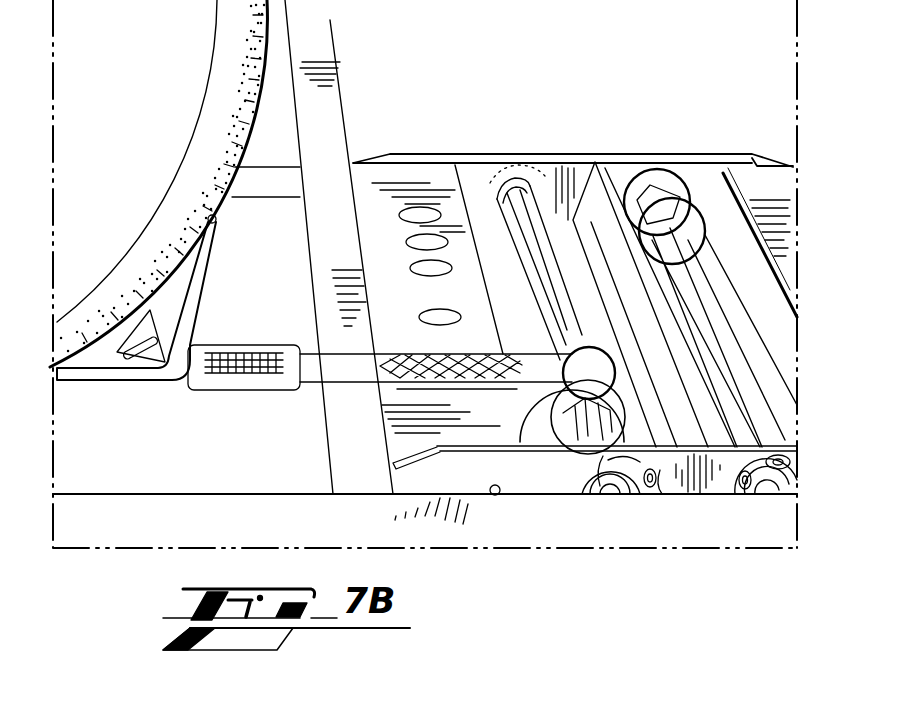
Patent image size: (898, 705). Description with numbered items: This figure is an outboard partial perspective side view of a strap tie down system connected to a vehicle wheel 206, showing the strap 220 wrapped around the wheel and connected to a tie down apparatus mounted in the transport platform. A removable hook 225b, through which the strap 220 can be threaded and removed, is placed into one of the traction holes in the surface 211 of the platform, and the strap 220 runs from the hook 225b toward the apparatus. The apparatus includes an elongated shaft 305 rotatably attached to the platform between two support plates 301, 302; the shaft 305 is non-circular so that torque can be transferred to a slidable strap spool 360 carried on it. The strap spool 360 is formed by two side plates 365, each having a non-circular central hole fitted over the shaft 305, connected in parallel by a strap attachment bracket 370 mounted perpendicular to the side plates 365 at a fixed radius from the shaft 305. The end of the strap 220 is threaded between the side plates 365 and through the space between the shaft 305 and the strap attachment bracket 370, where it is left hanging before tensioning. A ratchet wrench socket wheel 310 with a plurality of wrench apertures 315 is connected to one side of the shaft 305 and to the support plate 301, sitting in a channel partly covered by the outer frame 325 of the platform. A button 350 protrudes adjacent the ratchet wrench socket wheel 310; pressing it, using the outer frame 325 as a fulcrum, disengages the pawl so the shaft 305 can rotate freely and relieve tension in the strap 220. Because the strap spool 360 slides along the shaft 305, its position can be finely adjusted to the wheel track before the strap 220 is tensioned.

The vehicle wheel 206 is at (152, 72).
The surface 211 is at (280, 471).
The strap 220 is at (250, 348).
The hook 225b is at (73, 382).
The support plate 301 is at (720, 477).
The support plate 302 is at (437, 157).
The elongated shaft 305 is at (530, 192).
The ratchet wrench socket wheel 310 is at (613, 495).
The wrench apertures 315 is at (684, 476).
The outer frame 325 is at (340, 536).
The button 350 is at (494, 495).
The strap spool 360 is at (630, 156).
The side plates 365 is at (519, 428).
The strap attachment bracket 370 is at (584, 348).